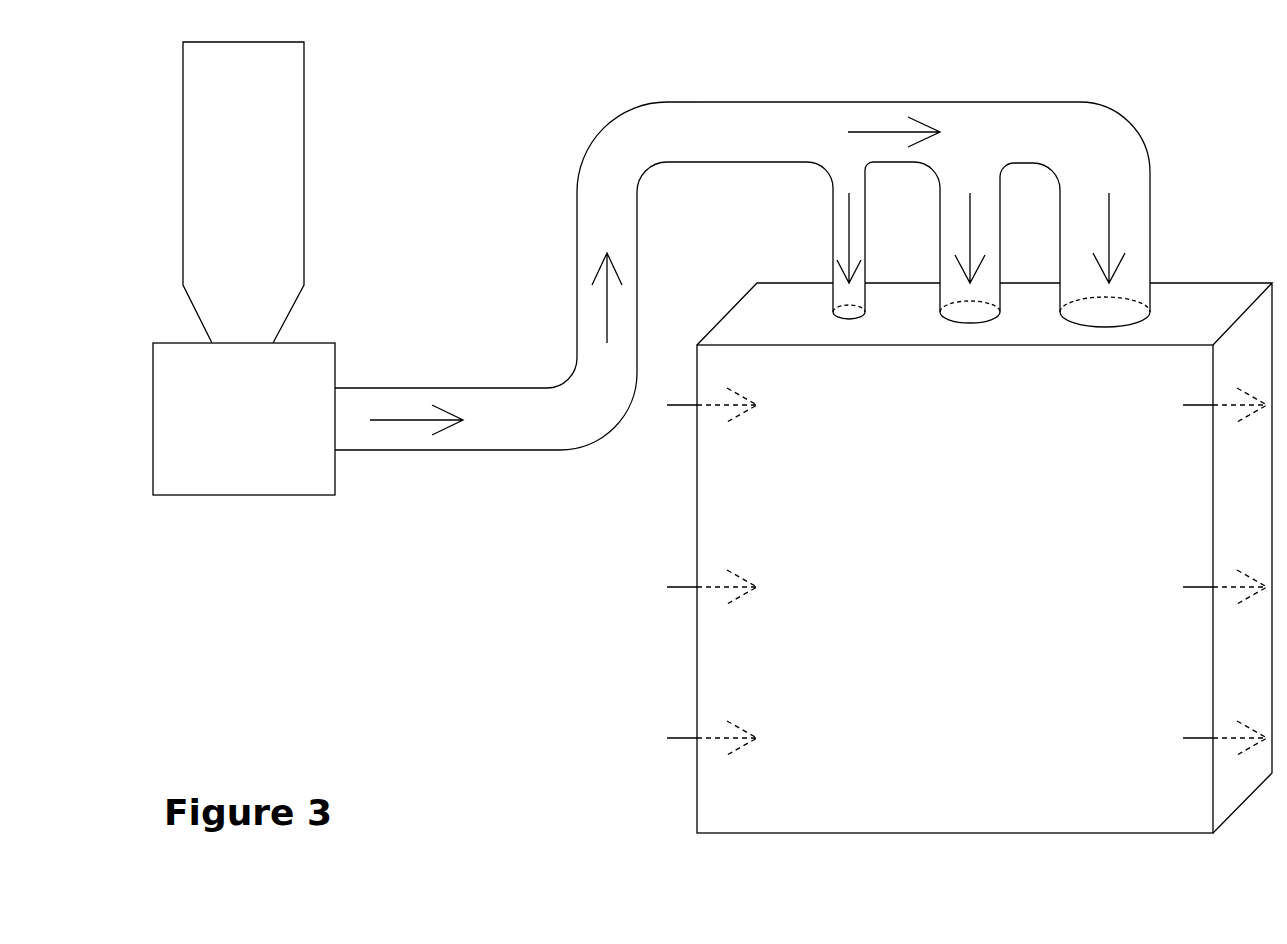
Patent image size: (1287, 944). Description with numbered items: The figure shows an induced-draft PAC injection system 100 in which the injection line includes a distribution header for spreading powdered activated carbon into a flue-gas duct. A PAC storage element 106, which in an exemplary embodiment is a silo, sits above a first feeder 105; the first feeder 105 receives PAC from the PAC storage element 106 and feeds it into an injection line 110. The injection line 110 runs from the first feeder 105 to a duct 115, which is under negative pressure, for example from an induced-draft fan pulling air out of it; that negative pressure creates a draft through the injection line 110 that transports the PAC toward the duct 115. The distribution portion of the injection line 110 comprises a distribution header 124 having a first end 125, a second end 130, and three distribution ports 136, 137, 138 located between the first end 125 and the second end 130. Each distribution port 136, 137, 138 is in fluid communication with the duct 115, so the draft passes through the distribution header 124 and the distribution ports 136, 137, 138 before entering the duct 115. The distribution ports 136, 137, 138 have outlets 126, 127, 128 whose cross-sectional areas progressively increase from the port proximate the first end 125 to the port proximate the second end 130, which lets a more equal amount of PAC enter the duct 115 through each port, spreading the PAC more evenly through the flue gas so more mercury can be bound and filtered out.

The induced-draft PAC injection system 100 is at (712, 429).
The first feeder 105 is at (273, 465).
The PAC storage element 106 is at (273, 162).
The injection line 110 is at (577, 313).
The duct 115 is at (757, 587).
The distribution header 124 is at (985, 70).
The first end 125 is at (773, 163).
The outlet 126 is at (848, 316).
The outlet 127 is at (968, 316).
The outlet 128 is at (1113, 316).
The second end 130 is at (1133, 133).
The distribution port 136 is at (866, 252).
The distribution port 137 is at (1000, 255).
The distribution port 138 is at (1152, 223).